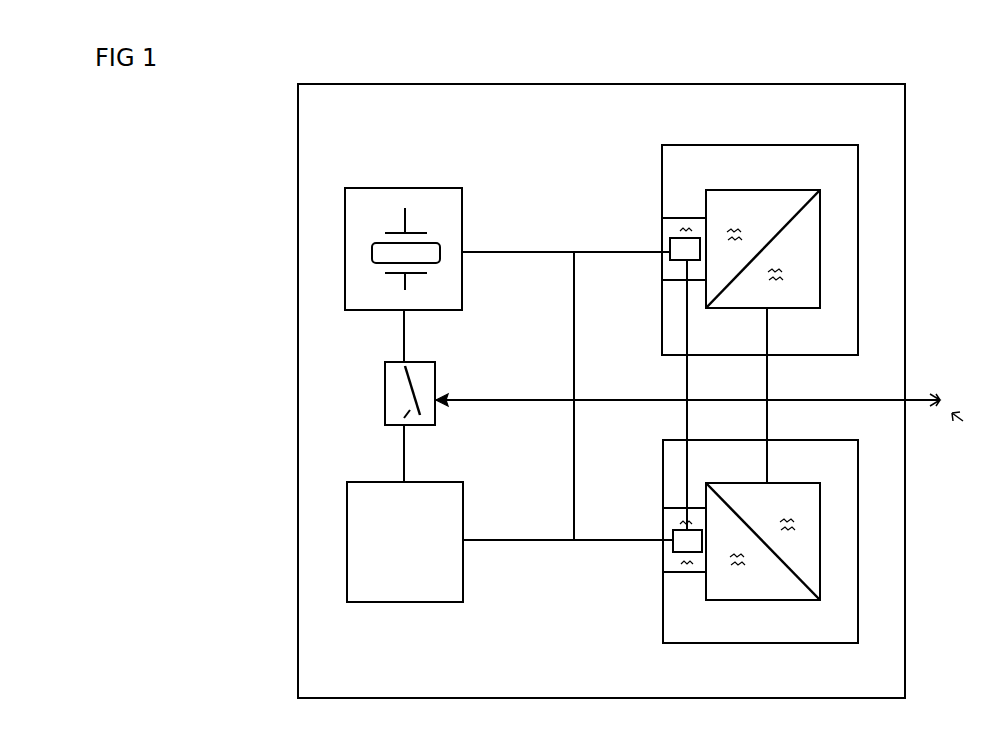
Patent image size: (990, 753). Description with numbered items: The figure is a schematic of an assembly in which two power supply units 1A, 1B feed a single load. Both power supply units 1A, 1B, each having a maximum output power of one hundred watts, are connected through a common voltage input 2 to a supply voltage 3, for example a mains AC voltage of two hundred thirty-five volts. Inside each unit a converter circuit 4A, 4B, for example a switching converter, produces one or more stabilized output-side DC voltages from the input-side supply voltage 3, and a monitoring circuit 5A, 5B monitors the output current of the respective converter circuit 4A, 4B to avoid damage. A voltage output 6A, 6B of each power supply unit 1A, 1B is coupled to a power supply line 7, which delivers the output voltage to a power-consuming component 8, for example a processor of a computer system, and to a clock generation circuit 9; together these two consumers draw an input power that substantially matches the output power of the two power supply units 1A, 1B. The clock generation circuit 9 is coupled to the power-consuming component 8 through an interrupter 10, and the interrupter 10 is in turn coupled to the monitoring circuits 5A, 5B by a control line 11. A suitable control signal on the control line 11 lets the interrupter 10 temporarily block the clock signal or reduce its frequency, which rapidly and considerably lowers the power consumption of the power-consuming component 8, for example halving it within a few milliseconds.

The first power supply unit 1A is at (797, 142).
The second power supply unit 1B is at (773, 643).
The common voltage input 2 is at (910, 390).
The supply voltage 3 is at (968, 429).
The converter circuit 4A is at (753, 183).
The converter circuit 4B is at (802, 473).
The monitoring circuit 5A is at (670, 214).
The monitoring circuit 5B is at (677, 573).
The voltage output 6A is at (662, 252).
The voltage output 6B is at (673, 540).
The power supply line 7 is at (574, 333).
The power-consuming component 8 is at (432, 602).
The clock generation circuit 9 is at (462, 203).
The interrupter 10 is at (384, 388).
The control line 11 is at (641, 394).